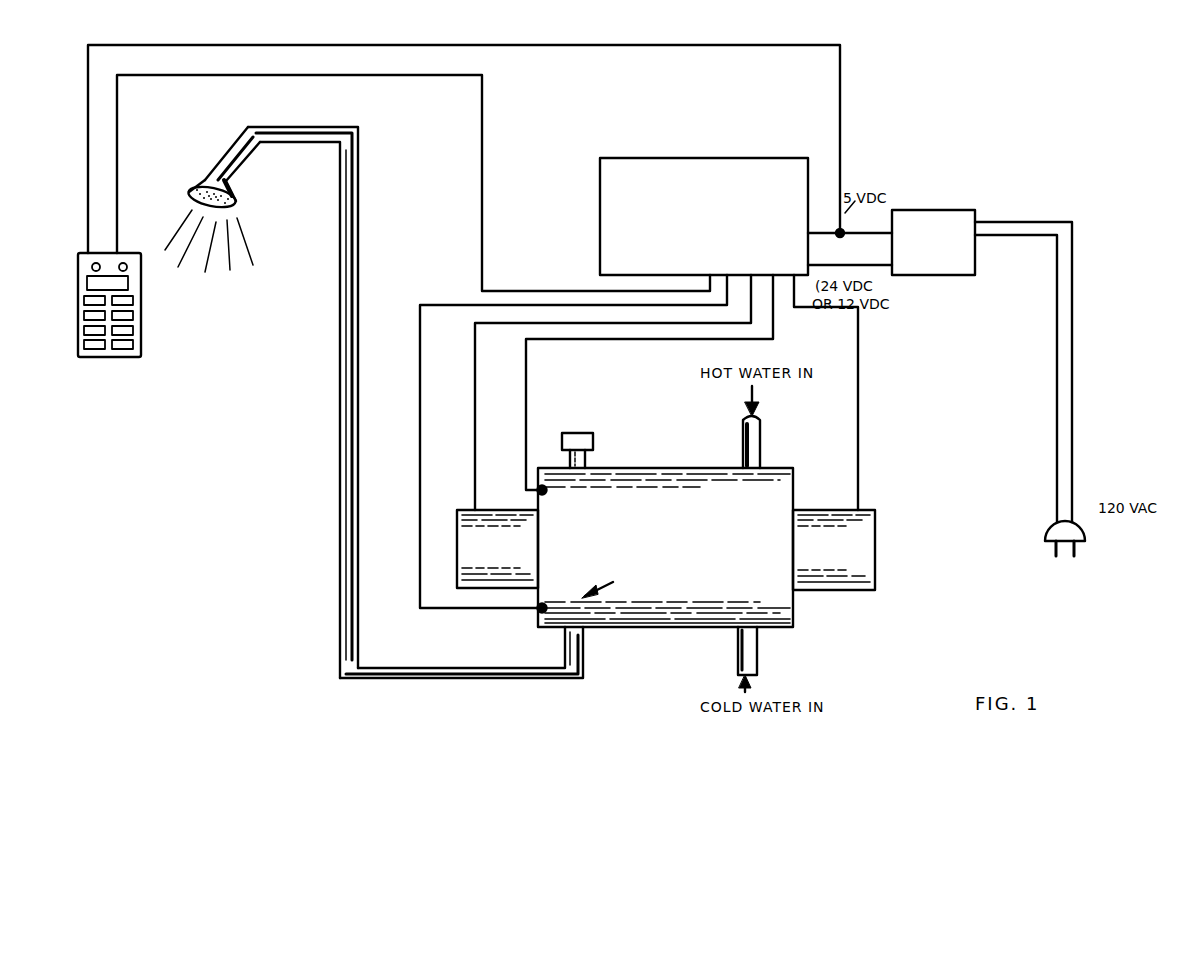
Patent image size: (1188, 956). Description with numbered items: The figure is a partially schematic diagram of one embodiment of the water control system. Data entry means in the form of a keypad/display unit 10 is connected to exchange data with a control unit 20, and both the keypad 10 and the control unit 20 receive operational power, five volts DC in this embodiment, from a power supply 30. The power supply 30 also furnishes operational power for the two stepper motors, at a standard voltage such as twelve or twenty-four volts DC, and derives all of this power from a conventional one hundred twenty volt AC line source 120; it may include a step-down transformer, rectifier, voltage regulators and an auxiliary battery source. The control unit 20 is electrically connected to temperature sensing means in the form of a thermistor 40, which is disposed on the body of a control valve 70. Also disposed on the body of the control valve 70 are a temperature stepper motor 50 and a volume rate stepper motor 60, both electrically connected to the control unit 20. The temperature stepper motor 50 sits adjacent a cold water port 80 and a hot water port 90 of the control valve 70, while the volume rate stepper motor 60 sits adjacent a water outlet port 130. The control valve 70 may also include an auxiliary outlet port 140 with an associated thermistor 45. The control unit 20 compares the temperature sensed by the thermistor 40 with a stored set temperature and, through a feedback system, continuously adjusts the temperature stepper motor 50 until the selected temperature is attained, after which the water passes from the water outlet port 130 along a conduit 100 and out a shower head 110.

The keypad/display unit 10 is at (105, 357).
The control unit 20 is at (780, 157).
The power supply 30 is at (968, 276).
The thermistor 40 is at (543, 606).
The thermistor 45 is at (548, 495).
The temperature stepper motor 50 is at (876, 530).
The volume rate stepper motor 60 is at (513, 510).
The control valve 70 is at (670, 468).
The cold water port 80 is at (760, 655).
The hot water port 90 is at (742, 436).
The conduit 100 is at (337, 433).
The shower head 110 is at (228, 190).
The line source 120 is at (1080, 545).
The water outlet port 130 is at (570, 680).
The auxiliary outlet port 140 is at (578, 433).